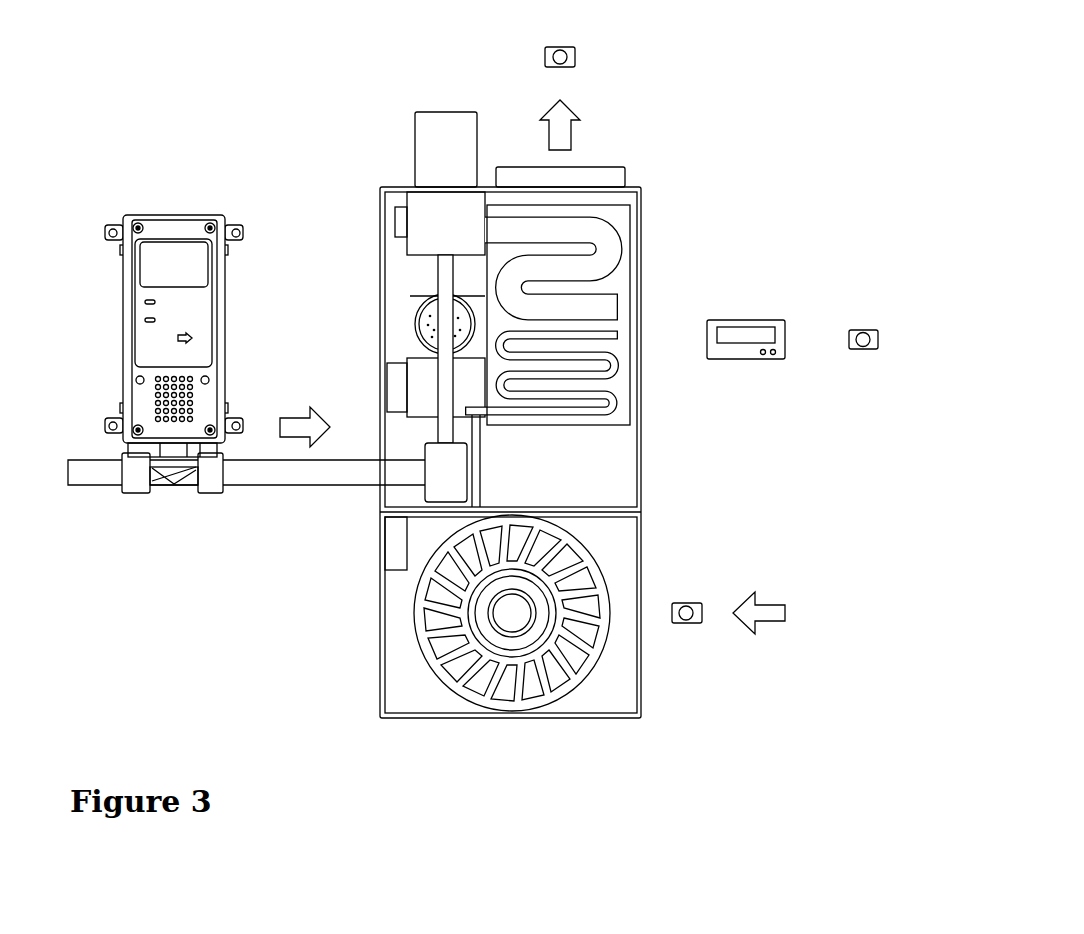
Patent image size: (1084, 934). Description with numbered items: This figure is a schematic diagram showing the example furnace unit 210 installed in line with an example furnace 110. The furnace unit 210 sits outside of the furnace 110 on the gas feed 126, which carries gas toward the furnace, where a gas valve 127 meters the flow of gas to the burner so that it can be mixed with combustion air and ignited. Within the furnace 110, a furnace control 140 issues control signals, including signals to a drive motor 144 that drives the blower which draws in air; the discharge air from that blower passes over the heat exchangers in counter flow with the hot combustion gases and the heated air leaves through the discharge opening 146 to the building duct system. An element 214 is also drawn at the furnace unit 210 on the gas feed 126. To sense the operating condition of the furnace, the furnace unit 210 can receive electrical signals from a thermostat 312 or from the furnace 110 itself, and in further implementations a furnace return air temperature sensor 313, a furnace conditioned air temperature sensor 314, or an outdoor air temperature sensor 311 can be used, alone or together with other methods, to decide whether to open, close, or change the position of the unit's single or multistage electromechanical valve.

The furnace 110 is at (587, 478).
The gas feed 126 is at (308, 472).
The gas valve 127 is at (440, 475).
The furnace control 140 is at (398, 543).
The drive motor 144 is at (482, 612).
The discharge opening 146 is at (612, 180).
The furnace unit 210 is at (175, 265).
The valve 214 is at (173, 473).
The outdoor air temperature sensor 311 is at (877, 332).
The thermostat 312 is at (748, 335).
The furnace return air temperature sensor 313 is at (700, 608).
The furnace conditioned air temperature sensor 314 is at (577, 53).